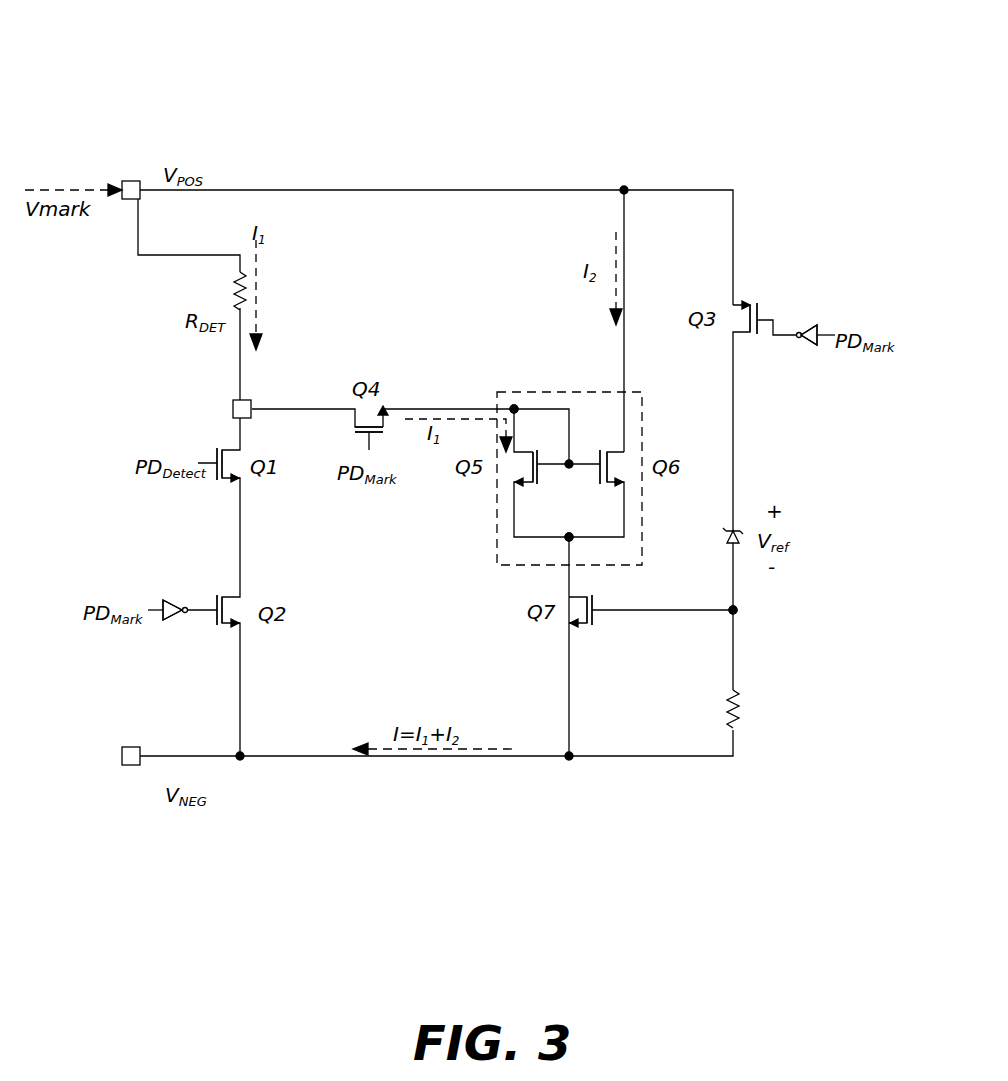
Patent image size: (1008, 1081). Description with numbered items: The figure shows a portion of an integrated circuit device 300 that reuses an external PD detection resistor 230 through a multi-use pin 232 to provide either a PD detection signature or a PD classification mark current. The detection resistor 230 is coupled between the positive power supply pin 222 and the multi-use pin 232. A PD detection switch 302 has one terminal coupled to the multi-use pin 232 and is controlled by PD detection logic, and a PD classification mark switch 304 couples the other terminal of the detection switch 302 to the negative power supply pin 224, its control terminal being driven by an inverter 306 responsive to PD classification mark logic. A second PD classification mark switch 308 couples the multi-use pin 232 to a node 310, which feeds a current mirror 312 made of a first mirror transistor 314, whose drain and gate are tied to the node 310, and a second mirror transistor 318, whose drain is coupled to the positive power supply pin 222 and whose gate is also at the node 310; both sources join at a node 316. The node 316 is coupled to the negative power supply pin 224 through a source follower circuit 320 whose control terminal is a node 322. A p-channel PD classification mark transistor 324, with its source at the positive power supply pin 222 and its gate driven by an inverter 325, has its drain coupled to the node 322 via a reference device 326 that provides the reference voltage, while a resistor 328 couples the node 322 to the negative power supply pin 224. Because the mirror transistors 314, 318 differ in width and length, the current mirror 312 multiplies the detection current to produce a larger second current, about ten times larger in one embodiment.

The integrated circuit device 300 is at (112, 28).
The positive power supply pin 222 is at (131, 181).
The negative power supply pin 224 is at (126, 748).
The PD detection resistor 230 is at (236, 291).
The multi-use pin 232 is at (235, 402).
The PD detection switch 302 is at (185, 511).
The PD classification mark switch 304 is at (188, 573).
The inverter 306 is at (165, 623).
The second PD classification mark switch 308 is at (318, 374).
The node 310 is at (514, 406).
The current mirror 312 is at (530, 390).
The first mirror transistor 314 is at (478, 511).
The node 316 is at (566, 540).
The second mirror transistor 318 is at (645, 395).
The source follower circuit 320 is at (532, 643).
The node 322 is at (730, 612).
The p-channel PD classification mark transistor 324 is at (700, 283).
The inverter 325 is at (808, 330).
The reference device 326 is at (730, 545).
The resistor 328 is at (733, 705).